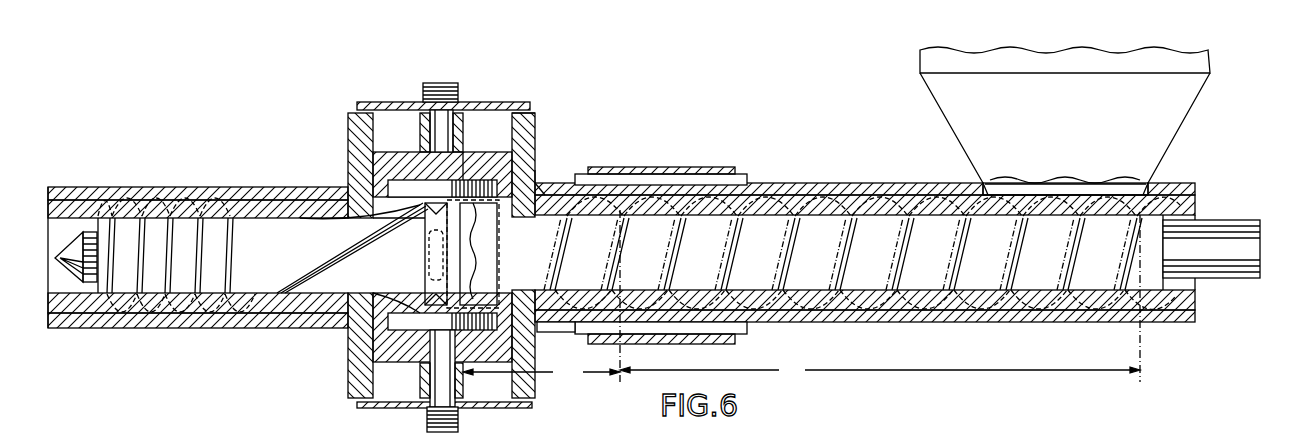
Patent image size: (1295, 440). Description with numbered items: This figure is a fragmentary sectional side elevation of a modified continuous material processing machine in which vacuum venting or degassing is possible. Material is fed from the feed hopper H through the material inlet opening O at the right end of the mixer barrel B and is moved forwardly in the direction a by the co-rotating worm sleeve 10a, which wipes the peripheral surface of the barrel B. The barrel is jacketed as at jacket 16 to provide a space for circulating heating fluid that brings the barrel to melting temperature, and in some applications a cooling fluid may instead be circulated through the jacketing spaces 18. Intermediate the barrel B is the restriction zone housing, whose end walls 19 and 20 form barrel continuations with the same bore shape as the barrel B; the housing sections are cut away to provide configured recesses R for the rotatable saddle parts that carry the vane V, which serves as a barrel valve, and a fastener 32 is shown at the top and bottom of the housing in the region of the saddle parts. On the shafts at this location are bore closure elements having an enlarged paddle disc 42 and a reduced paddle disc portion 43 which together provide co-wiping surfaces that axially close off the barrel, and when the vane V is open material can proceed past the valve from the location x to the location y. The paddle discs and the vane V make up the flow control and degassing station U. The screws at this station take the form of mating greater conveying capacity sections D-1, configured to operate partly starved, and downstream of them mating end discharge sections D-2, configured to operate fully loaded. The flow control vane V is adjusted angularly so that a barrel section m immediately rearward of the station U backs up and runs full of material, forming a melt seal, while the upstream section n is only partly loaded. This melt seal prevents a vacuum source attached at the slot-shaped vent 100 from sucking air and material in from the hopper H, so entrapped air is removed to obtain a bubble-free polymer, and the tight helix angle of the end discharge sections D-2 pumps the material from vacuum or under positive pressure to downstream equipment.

The mixer barrel B is at (898, 182).
The feed hopper H is at (1180, 128).
The material inlet opening O is at (1133, 187).
The jacketing spaces 18 is at (627, 180).
The jacket 16 is at (671, 166).
The worm sleeve 10a is at (710, 254).
The direction of material flow a is at (875, 252).
The greater conveying capacity sections D-1 is at (300, 270).
The end discharge sections D-2 is at (167, 327).
The housing end wall 20 is at (348, 128).
The bolt 32 is at (458, 83).
The vane V is at (475, 168).
The housing end wall 19 is at (537, 128).
The degassing station U is at (538, 172).
The location in barrel x is at (545, 192).
The location in barrel y is at (352, 175).
The recess R is at (406, 176).
The vent 100 is at (431, 255).
The paddle disc 42 is at (456, 290).
The reduced paddle disc portion 43 is at (433, 290).
The barrel section m is at (541, 297).
The upstream barrel section n is at (880, 299).